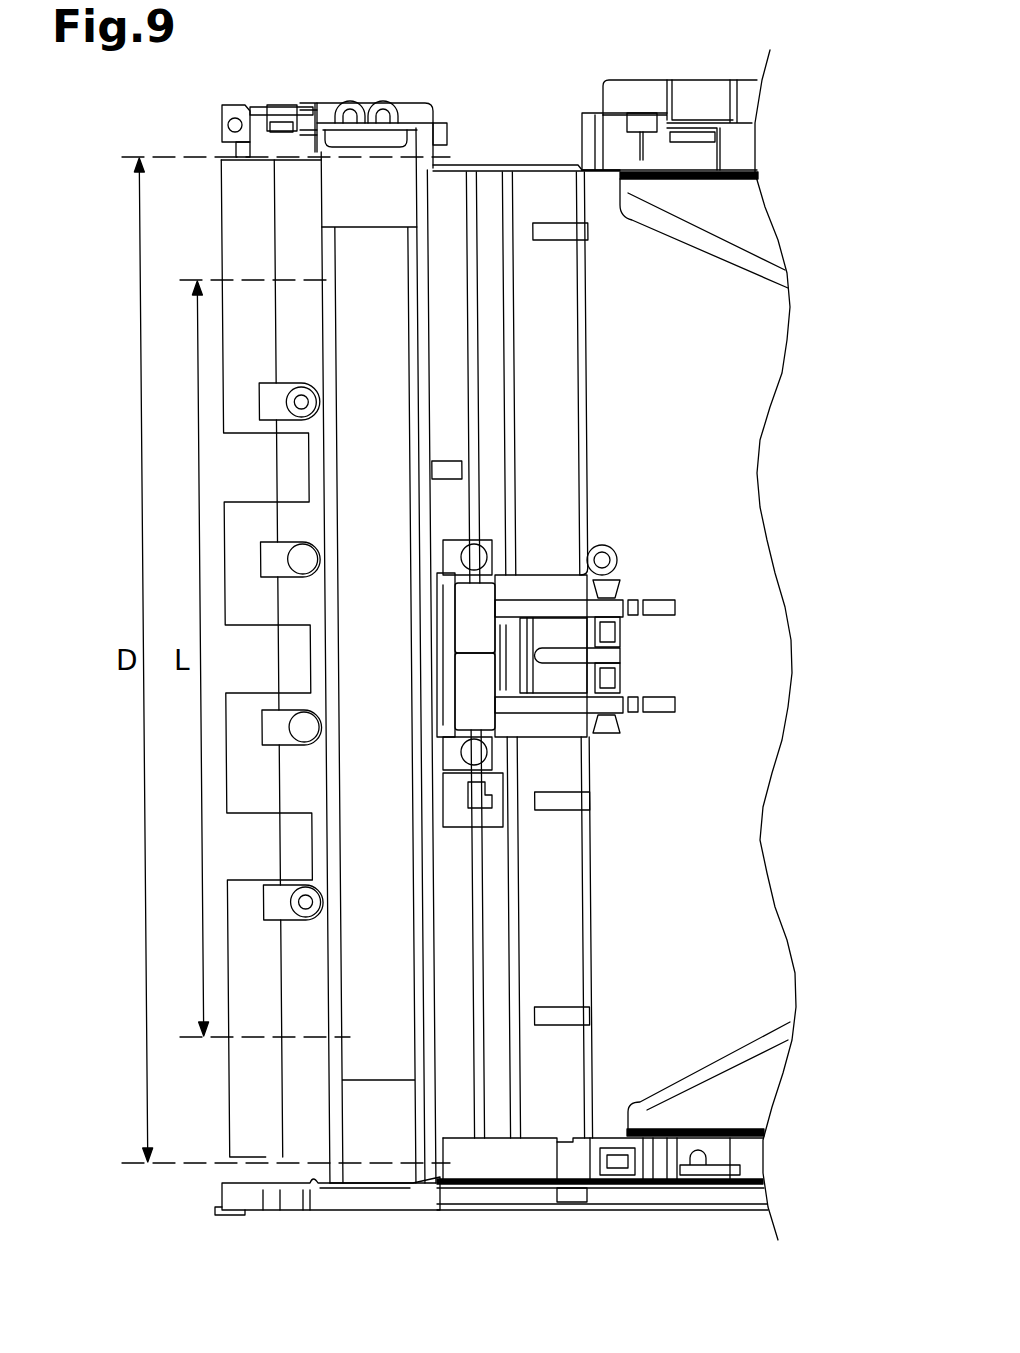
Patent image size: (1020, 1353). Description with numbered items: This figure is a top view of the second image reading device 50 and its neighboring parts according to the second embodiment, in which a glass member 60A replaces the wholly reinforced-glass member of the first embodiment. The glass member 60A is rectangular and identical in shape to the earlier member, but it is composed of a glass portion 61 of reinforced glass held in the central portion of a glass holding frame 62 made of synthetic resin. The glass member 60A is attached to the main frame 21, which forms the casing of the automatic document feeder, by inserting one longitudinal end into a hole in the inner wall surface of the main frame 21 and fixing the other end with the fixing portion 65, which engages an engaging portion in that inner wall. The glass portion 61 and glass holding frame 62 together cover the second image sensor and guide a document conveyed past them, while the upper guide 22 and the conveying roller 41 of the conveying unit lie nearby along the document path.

The main frame 21 is at (447, 167).
The upper guide 22 is at (740, 508).
The conveying roller 41 is at (478, 607).
The second image reading device 50 is at (374, 262).
The glass member 60A is at (404, 173).
The glass portion 61 is at (383, 900).
The glass holding frame 62 is at (352, 200).
The fixing portion 65 is at (345, 103).